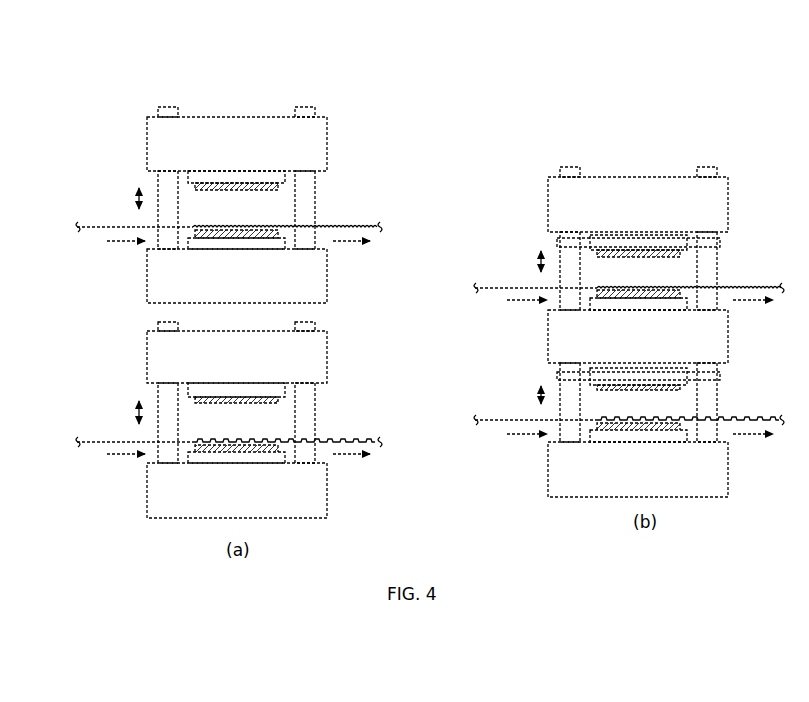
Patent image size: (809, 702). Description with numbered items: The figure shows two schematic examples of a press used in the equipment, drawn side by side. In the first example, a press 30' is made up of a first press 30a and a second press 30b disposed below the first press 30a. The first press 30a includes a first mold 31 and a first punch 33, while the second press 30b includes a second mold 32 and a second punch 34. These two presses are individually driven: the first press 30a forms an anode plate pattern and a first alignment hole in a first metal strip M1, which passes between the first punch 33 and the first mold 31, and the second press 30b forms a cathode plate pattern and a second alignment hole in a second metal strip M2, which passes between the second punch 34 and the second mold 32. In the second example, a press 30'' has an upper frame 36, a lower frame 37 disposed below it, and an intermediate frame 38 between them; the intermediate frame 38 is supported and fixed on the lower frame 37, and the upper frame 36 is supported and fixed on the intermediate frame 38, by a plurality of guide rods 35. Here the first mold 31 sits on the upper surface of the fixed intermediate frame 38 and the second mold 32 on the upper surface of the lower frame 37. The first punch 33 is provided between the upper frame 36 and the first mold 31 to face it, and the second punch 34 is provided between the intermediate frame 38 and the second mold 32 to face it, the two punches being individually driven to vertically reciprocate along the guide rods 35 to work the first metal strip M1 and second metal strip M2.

The press 30' is at (420, 267).
The press 30'' is at (660, 286).
The first press 30a is at (340, 130).
The second press 30b is at (340, 342).
The first mold 31 is at (311, 277).
The second mold 32 is at (311, 489).
The first punch 33 is at (311, 151).
The second punch 34 is at (311, 364).
The guide rod 35 is at (717, 268).
The upper frame 36 is at (723, 211).
The lower frame 37 is at (723, 470).
The intermediate frame 38 is at (723, 336).
The first metal strip M1 is at (92, 234).
The second metal strip M2 is at (92, 438).